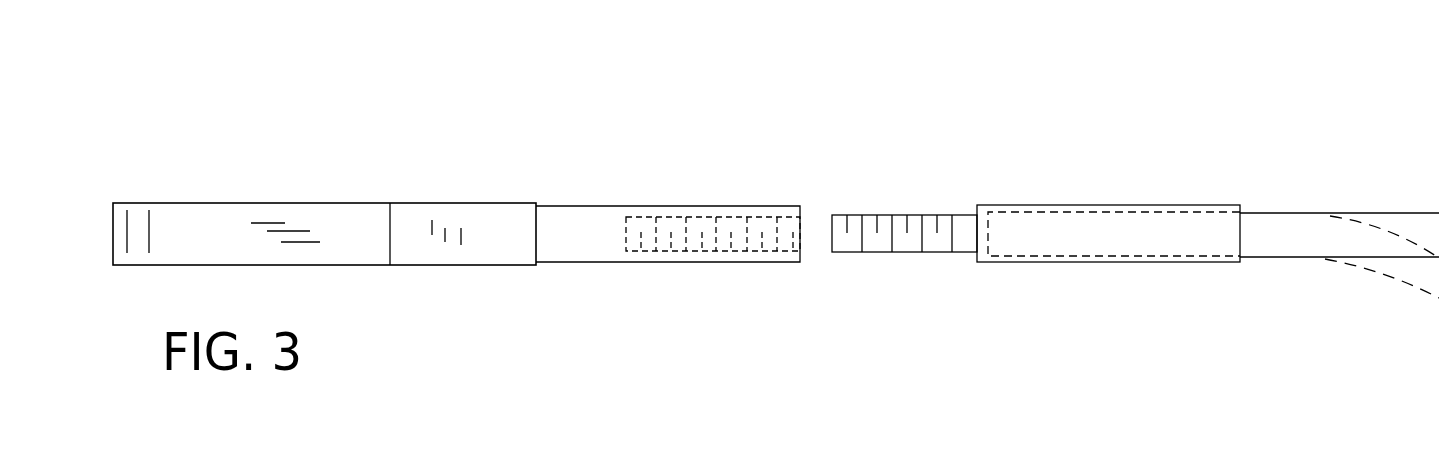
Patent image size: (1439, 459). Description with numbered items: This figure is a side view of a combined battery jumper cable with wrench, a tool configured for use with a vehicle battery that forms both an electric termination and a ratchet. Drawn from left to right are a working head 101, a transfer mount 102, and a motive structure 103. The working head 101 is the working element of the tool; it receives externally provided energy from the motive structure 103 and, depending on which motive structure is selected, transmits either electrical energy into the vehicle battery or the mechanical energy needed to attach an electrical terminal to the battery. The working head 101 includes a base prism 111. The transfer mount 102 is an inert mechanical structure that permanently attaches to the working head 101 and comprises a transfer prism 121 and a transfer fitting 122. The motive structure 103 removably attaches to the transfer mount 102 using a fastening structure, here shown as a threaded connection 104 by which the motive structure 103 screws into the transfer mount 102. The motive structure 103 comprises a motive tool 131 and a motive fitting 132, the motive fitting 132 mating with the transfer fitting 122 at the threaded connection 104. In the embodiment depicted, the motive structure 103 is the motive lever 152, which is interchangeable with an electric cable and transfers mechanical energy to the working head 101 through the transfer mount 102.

The working head 101 is at (225, 120).
The base prism 111 is at (324, 225).
The transfer mount 102 is at (572, 185).
The transfer prism 121 is at (566, 235).
The transfer fitting 122 is at (731, 225).
The threaded connection 104 is at (965, 105).
The motive fitting 132 is at (880, 215).
The motive structure 103 is at (1165, 183).
The motive tool 131 is at (1058, 220).
The motive lever 152 is at (1283, 235).